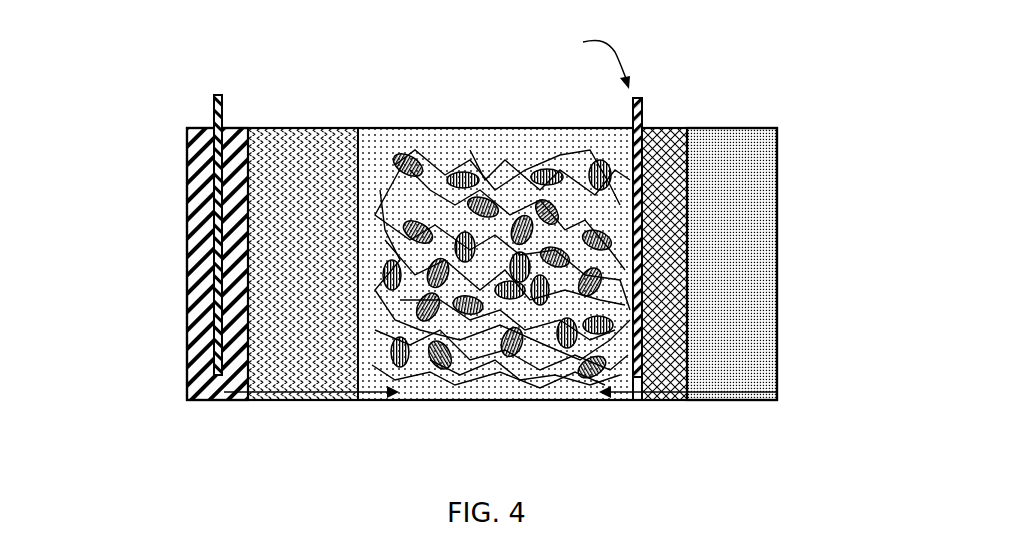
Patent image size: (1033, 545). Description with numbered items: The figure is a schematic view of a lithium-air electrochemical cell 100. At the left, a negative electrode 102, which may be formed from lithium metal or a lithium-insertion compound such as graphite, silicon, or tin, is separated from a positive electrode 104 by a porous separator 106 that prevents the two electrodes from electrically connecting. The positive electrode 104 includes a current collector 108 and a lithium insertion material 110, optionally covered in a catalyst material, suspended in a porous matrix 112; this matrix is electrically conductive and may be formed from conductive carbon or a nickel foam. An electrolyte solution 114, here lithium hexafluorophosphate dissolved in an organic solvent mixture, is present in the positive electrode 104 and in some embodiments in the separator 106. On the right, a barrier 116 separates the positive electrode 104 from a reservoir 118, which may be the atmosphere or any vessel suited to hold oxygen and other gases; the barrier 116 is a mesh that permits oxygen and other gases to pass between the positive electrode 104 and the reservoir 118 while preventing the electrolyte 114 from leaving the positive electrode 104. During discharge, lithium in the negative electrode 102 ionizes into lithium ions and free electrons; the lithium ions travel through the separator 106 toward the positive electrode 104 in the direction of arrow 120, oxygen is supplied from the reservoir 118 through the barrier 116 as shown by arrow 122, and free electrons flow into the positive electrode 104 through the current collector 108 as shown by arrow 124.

The electrochemical cell 100 is at (117, 90).
The negative electrode 102 is at (187, 219).
The positive electrode 104 is at (588, 396).
The porous separator 106 is at (290, 386).
The current collector 108 is at (642, 103).
The lithium insertion material 110 is at (398, 146).
The porous matrix 112 is at (505, 147).
The electrolyte solution 114 is at (493, 385).
The barrier 116 is at (672, 128).
The reservoir 118 is at (777, 237).
The arrow 120 is at (347, 388).
The arrow 122 is at (718, 390).
The arrow 124 is at (605, 50).